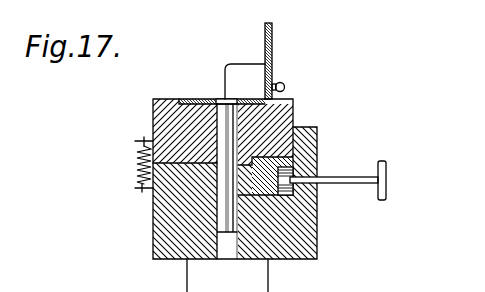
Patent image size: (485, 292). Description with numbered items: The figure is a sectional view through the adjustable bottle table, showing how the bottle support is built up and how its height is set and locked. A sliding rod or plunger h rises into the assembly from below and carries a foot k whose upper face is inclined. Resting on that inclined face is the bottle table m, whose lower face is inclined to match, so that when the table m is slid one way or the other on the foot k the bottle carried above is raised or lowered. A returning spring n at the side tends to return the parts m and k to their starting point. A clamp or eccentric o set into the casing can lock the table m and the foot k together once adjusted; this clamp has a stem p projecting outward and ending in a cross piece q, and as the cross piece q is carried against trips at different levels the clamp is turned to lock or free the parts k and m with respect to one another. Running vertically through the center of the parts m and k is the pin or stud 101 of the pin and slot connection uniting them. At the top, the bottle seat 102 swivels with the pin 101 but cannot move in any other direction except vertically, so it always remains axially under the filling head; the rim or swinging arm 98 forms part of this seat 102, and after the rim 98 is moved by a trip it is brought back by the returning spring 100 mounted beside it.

The rim or swinging arm 98 is at (281, 61).
The returning spring 100 is at (285, 85).
The pin or stud 101 is at (225, 98).
The bottle seat 102 is at (189, 98).
The bottle table m is at (293, 112).
The returning spring n is at (136, 172).
The clamp or eccentric o is at (294, 168).
The stem p is at (334, 194).
The cross piece q is at (391, 180).
The foot k is at (153, 230).
The sliding rod or plunger h is at (227, 275).